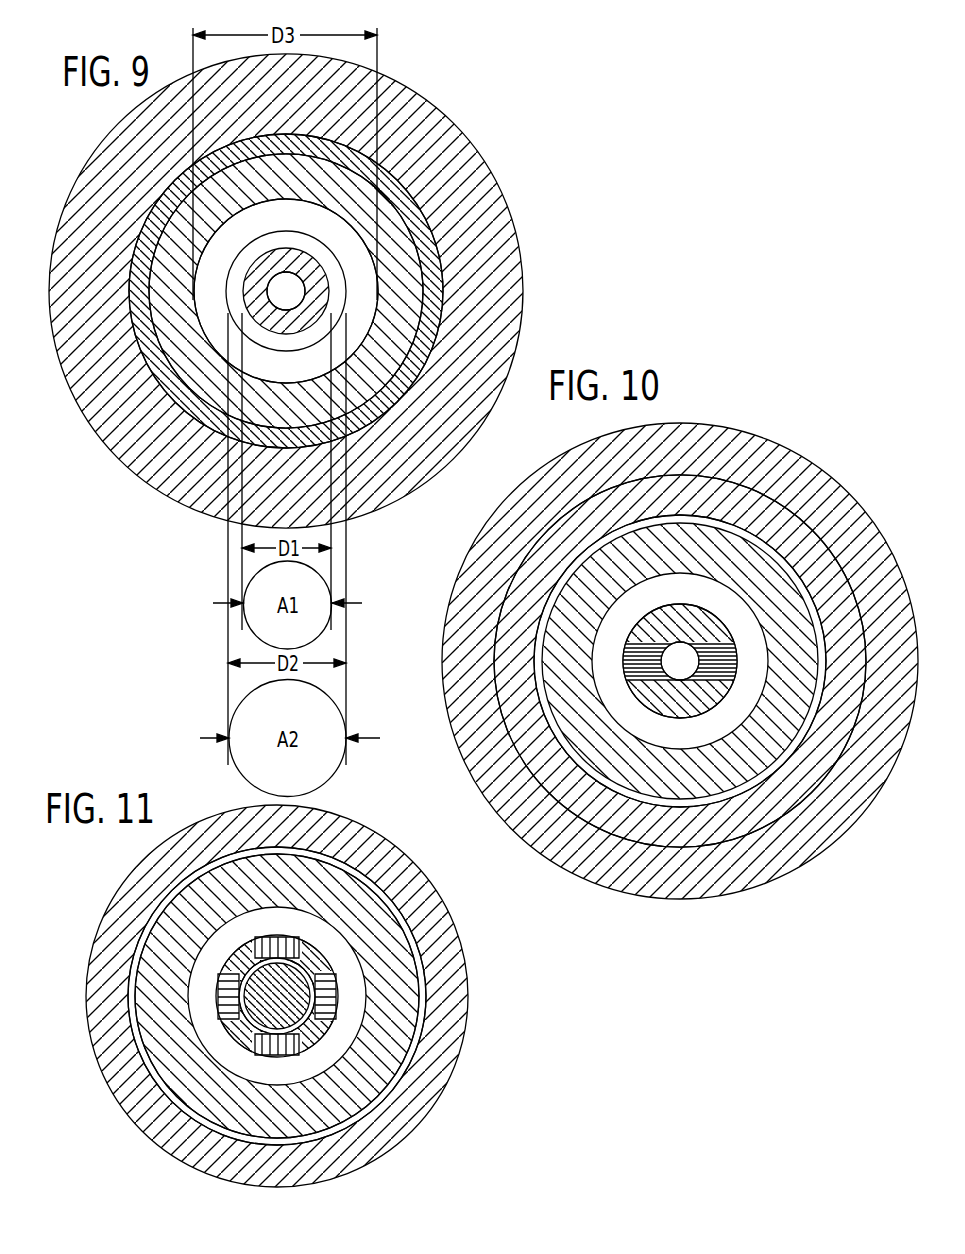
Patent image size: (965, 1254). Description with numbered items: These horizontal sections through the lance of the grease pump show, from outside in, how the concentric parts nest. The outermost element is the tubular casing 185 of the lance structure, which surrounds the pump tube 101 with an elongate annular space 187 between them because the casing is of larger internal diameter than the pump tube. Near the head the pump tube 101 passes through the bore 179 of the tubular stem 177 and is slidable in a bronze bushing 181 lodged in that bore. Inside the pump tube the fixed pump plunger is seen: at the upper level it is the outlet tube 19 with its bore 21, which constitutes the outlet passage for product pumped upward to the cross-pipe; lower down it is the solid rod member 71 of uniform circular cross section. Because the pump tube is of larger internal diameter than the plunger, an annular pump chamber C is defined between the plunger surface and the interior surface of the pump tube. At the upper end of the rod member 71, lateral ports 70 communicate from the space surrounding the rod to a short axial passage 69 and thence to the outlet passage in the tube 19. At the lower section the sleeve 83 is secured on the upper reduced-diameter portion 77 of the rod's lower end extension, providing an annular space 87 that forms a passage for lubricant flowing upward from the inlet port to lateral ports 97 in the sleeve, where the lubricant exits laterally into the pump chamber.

In FIG. 9, the tubular casing 185 is at (472, 138).
In FIG. 10, the tubular casing 185 is at (795, 768).
In FIG. 11, the tubular casing 185 is at (110, 1088).
In FIG. 9, the bronze bushing 181 is at (412, 213).
In FIG. 9, the bore 179 is at (374, 291).
In FIG. 9, the pump tube 101 is at (394, 264).
In FIG. 10, the pump tube 101 is at (655, 765).
In FIG. 11, the pump tube 101 is at (212, 1090).
In FIG. 9, the solid rod member 71 is at (273, 243).
In FIG. 10, the solid rod member 71 is at (728, 620).
In FIG. 9, the outlet tube 19 is at (268, 332).
In FIG. 9, the bore 21 is at (300, 302).
In FIG. 9, the annular pump chamber C is at (215, 307).
In FIG. 10, the annular pump chamber C is at (726, 723).
In FIG. 11, the annular pump chamber C is at (207, 1033).
In FIG. 10, the tubular stem 177 is at (753, 433).
In FIG. 10, the lateral ports 70 is at (720, 660).
In FIG. 10, the axial passage 69 is at (670, 662).
In FIG. 11, the sleeve 83 is at (269, 1006).
In FIG. 11, the lateral ports 97 is at (290, 942).
In FIG. 11, the annular space 87 is at (248, 1036).
In FIG. 11, the upper reduced-diameter portion 77 is at (288, 1007).
In FIG. 11, the annular space 187 is at (392, 1083).